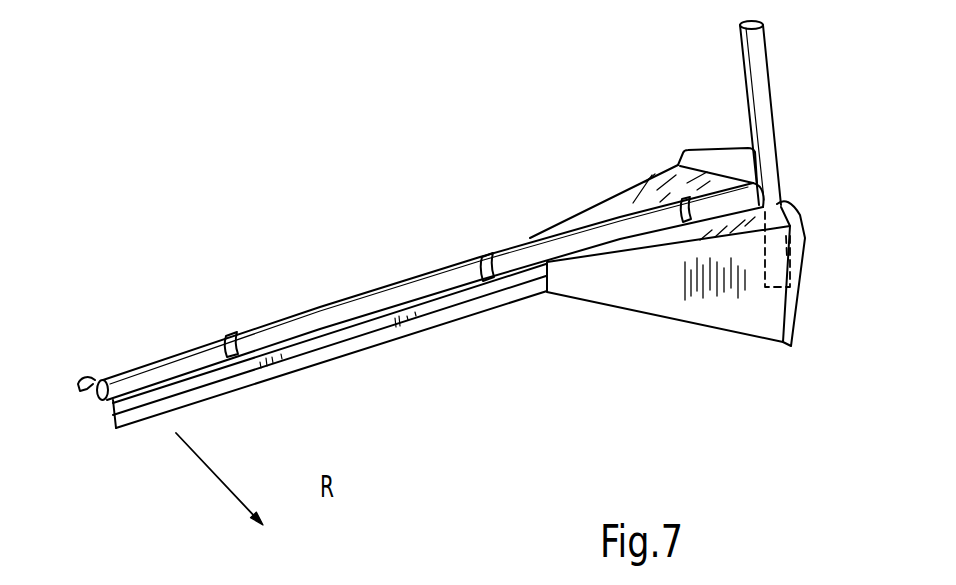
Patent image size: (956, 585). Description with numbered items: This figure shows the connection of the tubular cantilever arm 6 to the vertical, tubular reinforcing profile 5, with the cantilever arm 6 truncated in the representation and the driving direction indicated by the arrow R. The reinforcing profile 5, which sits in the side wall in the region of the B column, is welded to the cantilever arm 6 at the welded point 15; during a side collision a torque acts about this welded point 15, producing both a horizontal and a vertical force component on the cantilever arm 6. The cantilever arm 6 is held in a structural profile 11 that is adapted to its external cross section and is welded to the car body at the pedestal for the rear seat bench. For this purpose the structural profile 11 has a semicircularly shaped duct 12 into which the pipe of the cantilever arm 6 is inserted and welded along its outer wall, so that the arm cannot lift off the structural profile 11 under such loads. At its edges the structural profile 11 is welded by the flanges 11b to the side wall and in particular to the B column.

The reinforcing profile 5 is at (760, 96).
The cantilever arm 6 is at (459, 242).
The structural profile 11 is at (373, 327).
The flange 11b is at (797, 278).
The semicircularly shaped duct 12 is at (89, 410).
The welded point 15 is at (737, 165).